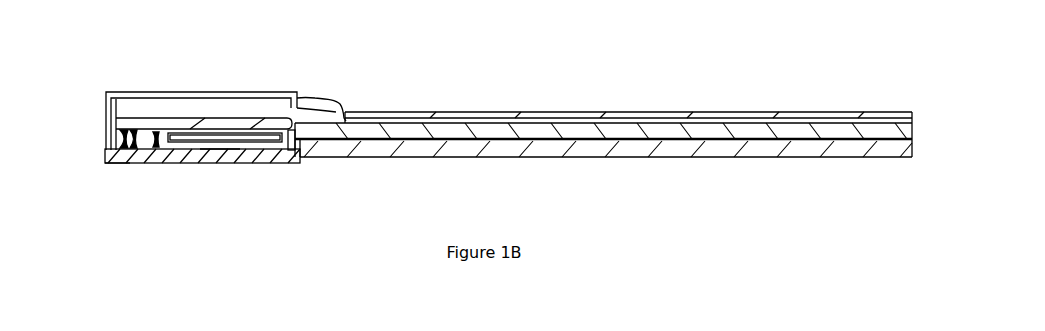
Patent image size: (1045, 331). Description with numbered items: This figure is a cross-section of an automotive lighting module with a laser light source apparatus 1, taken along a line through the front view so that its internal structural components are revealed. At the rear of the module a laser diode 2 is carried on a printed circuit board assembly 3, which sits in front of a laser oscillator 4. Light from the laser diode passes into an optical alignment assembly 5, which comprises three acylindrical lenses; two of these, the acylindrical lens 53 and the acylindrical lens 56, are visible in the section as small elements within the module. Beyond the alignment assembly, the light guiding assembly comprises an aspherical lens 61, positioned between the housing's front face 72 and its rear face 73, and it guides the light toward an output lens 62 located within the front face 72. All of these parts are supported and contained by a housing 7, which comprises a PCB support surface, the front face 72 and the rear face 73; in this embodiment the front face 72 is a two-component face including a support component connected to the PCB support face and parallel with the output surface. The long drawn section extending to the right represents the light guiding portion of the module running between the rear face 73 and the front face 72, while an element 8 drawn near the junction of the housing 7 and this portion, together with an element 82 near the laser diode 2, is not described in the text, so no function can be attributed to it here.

The laser light source apparatus 1 is at (88, 81).
The laser diode 2 is at (103, 161).
The printed circuit board assembly 3 is at (108, 113).
The laser oscillator 4 is at (219, 150).
The optical alignment assembly 5 is at (207, 117).
The housing 7 is at (163, 93).
The cover 8 is at (352, 122).
The acylindrical lens 53 is at (155, 144).
The acylindrical lens 56 is at (164, 147).
The aspherical lens 61 is at (300, 152).
The output lens 62 is at (462, 158).
The front face 72 is at (118, 163).
The rear face 73 is at (462, 113).
The contact 82 is at (132, 148).